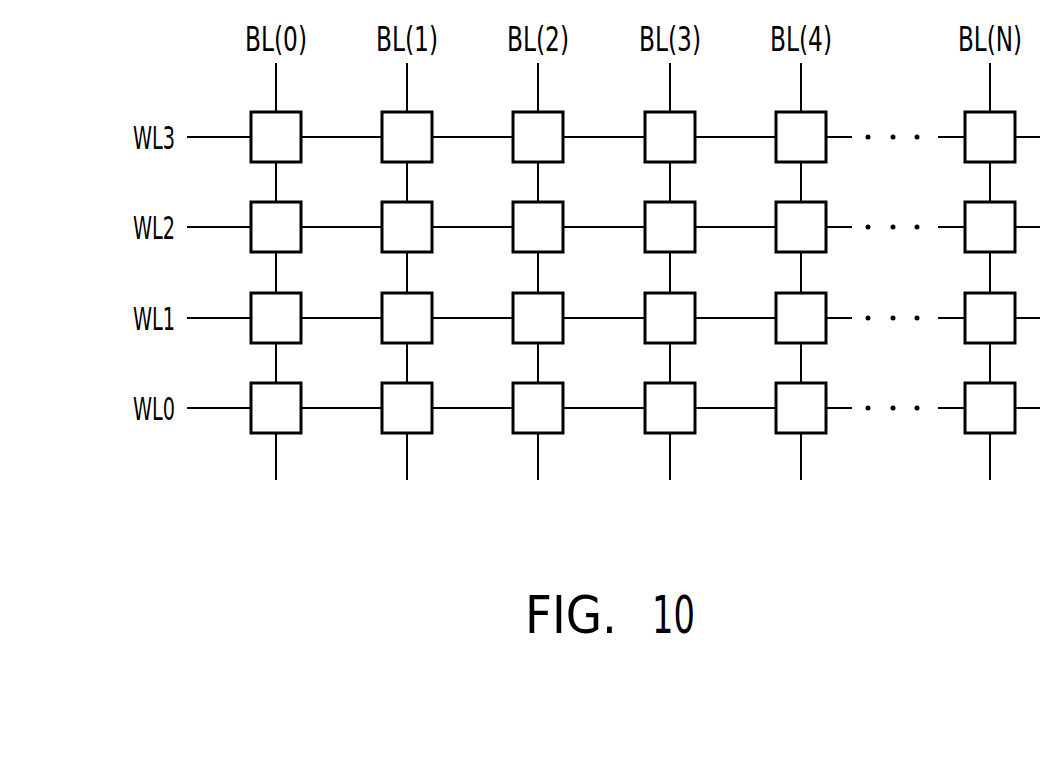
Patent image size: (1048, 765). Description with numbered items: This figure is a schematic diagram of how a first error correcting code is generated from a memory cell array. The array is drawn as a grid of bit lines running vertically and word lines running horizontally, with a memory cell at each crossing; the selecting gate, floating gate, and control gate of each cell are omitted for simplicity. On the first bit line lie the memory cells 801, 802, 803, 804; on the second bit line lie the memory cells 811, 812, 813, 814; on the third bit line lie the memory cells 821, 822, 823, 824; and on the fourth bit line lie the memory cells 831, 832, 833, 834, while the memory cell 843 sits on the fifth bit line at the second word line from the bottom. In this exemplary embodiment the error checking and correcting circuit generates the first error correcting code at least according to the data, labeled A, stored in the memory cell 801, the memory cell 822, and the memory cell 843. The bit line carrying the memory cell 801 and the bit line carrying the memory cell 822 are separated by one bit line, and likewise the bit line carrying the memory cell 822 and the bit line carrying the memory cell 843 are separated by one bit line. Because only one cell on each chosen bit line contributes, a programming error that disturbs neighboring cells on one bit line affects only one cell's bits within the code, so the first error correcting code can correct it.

The memory cell 801 is at (262, 110).
The memory cell 802 is at (262, 200).
The memory cell 803 is at (262, 291).
The memory cell 804 is at (262, 381).
The memory cell 811 is at (393, 110).
The memory cell 812 is at (393, 200).
The memory cell 813 is at (393, 291).
The memory cell 814 is at (393, 381).
The memory cell 821 is at (524, 110).
The memory cell 822 is at (524, 200).
The memory cell 823 is at (524, 291).
The memory cell 824 is at (524, 381).
The memory cell 831 is at (656, 110).
The memory cell 832 is at (656, 200).
The memory cell 833 is at (656, 291).
The memory cell 834 is at (656, 381).
The memory cell 843 is at (787, 291).